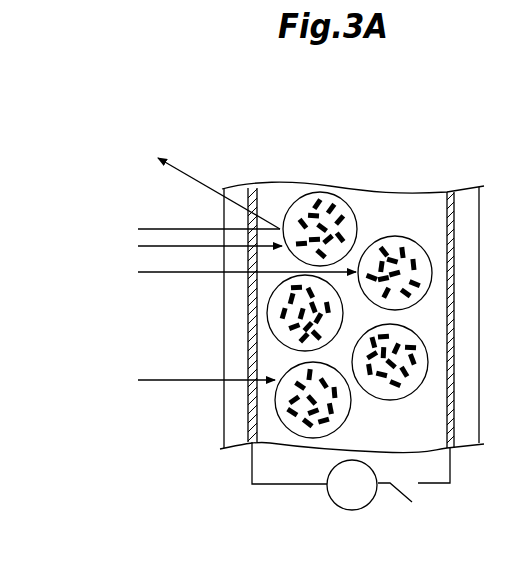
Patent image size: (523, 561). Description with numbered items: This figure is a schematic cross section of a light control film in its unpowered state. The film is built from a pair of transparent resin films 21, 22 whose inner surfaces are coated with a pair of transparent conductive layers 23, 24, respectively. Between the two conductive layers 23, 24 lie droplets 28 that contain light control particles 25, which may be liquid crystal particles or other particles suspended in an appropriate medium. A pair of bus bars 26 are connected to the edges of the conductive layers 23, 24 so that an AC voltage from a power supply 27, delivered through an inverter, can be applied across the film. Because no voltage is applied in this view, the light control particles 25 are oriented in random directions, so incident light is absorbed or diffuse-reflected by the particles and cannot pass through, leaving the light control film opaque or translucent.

The transparent resin film 21 is at (237, 193).
The transparent resin film 22 is at (468, 193).
The transparent conductive layer 23 is at (251, 199).
The transparent conductive layer 24 is at (450, 197).
The light control particles 25 is at (327, 194).
The bus bars 26 is at (251, 467).
The power supply 27 is at (368, 505).
The droplets 28 is at (357, 217).